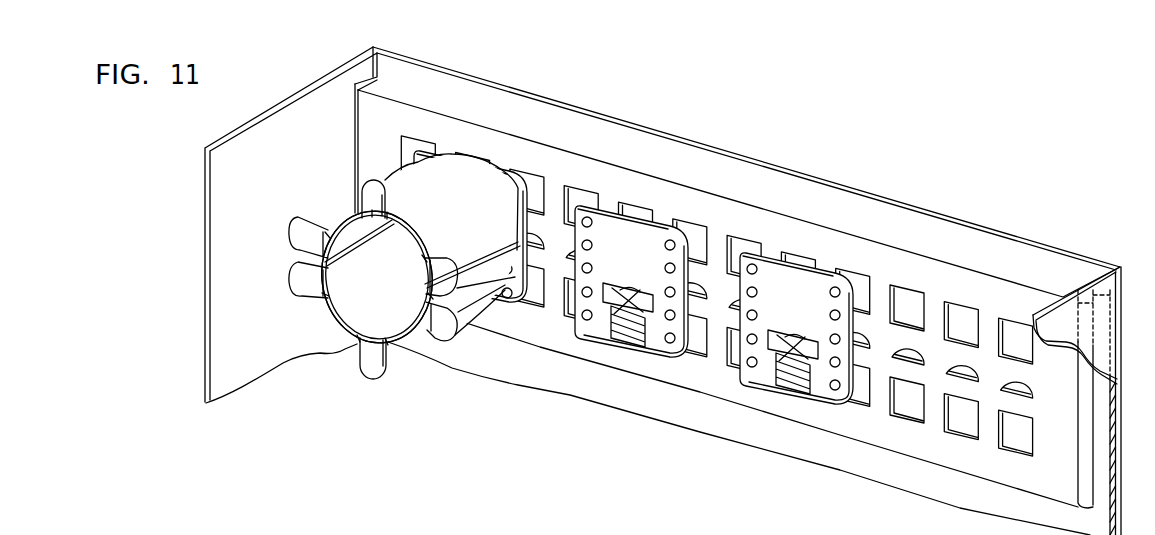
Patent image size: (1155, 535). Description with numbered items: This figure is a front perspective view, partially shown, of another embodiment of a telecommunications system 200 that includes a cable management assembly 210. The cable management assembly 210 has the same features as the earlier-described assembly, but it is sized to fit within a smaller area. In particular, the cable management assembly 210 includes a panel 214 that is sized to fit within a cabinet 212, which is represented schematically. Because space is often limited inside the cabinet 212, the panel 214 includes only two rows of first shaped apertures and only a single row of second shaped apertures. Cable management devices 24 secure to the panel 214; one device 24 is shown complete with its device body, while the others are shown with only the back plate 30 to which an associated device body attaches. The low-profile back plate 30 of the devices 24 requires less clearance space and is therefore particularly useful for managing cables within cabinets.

The telecommunications system 200 is at (1008, 140).
The cable management assembly 210 is at (565, 136).
The cabinet 212 is at (687, 157).
The panel 214 is at (882, 430).
The device 24 is at (300, 315).
The back plate 30 is at (495, 298).